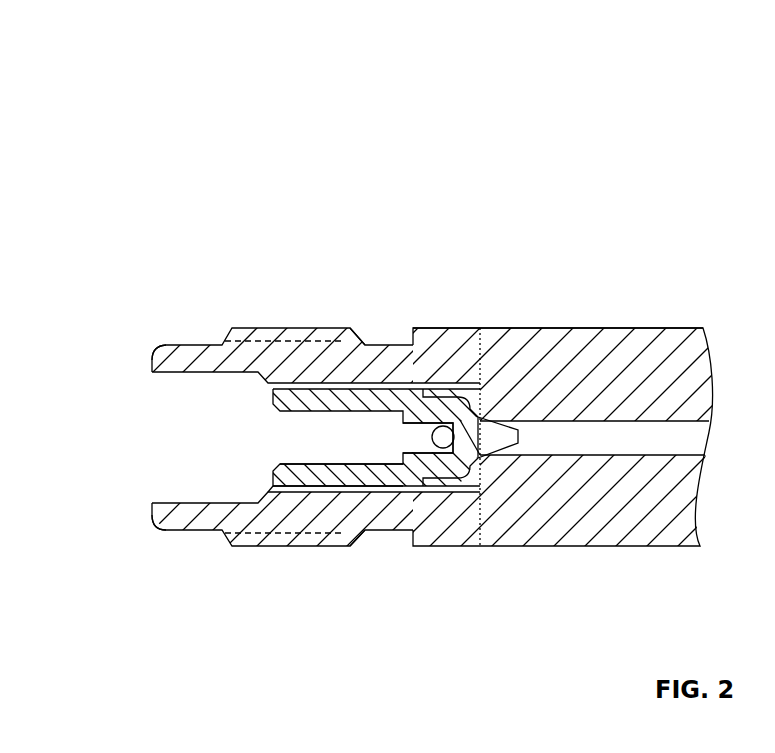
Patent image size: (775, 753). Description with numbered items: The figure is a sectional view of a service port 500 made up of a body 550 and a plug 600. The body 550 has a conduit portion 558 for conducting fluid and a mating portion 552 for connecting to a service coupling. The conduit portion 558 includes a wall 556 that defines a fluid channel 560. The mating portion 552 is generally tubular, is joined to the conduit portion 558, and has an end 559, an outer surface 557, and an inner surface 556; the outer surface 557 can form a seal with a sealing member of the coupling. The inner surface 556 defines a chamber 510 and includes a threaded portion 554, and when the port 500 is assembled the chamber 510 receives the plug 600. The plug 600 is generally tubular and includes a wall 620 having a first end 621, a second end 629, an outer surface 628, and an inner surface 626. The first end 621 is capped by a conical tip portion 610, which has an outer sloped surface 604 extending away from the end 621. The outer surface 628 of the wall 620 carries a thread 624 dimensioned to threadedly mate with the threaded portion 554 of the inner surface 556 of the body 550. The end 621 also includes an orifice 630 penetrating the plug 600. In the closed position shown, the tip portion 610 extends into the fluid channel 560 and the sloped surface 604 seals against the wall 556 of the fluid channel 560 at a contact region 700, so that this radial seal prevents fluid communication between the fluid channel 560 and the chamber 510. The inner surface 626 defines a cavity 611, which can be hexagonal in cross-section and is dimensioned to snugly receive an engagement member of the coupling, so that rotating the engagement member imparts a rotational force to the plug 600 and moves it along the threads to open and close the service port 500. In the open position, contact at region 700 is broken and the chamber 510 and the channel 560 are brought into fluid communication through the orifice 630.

The service port 500 is at (610, 242).
The chamber 510 is at (247, 441).
The body 550 is at (562, 358).
The mating portion 552 is at (247, 367).
The threaded portion 554 is at (385, 385).
The wall 556 is at (293, 328).
The outer surface 557 is at (183, 344).
The conduit portion 558 is at (629, 383).
The end 559 is at (157, 345).
The fluid channel 560 is at (656, 448).
The plug 600 is at (452, 475).
The outer sloped surface 604 is at (490, 462).
The conical tip portion 610 is at (520, 437).
The cavity 611 is at (349, 441).
The wall 620 is at (350, 493).
The first end 621 is at (458, 405).
The thread 624 is at (405, 488).
The inner surface 626 is at (372, 394).
The outer surface 628 is at (405, 488).
The second end 629 is at (297, 505).
The orifice 630 is at (432, 445).
The contact region 700 is at (484, 417).